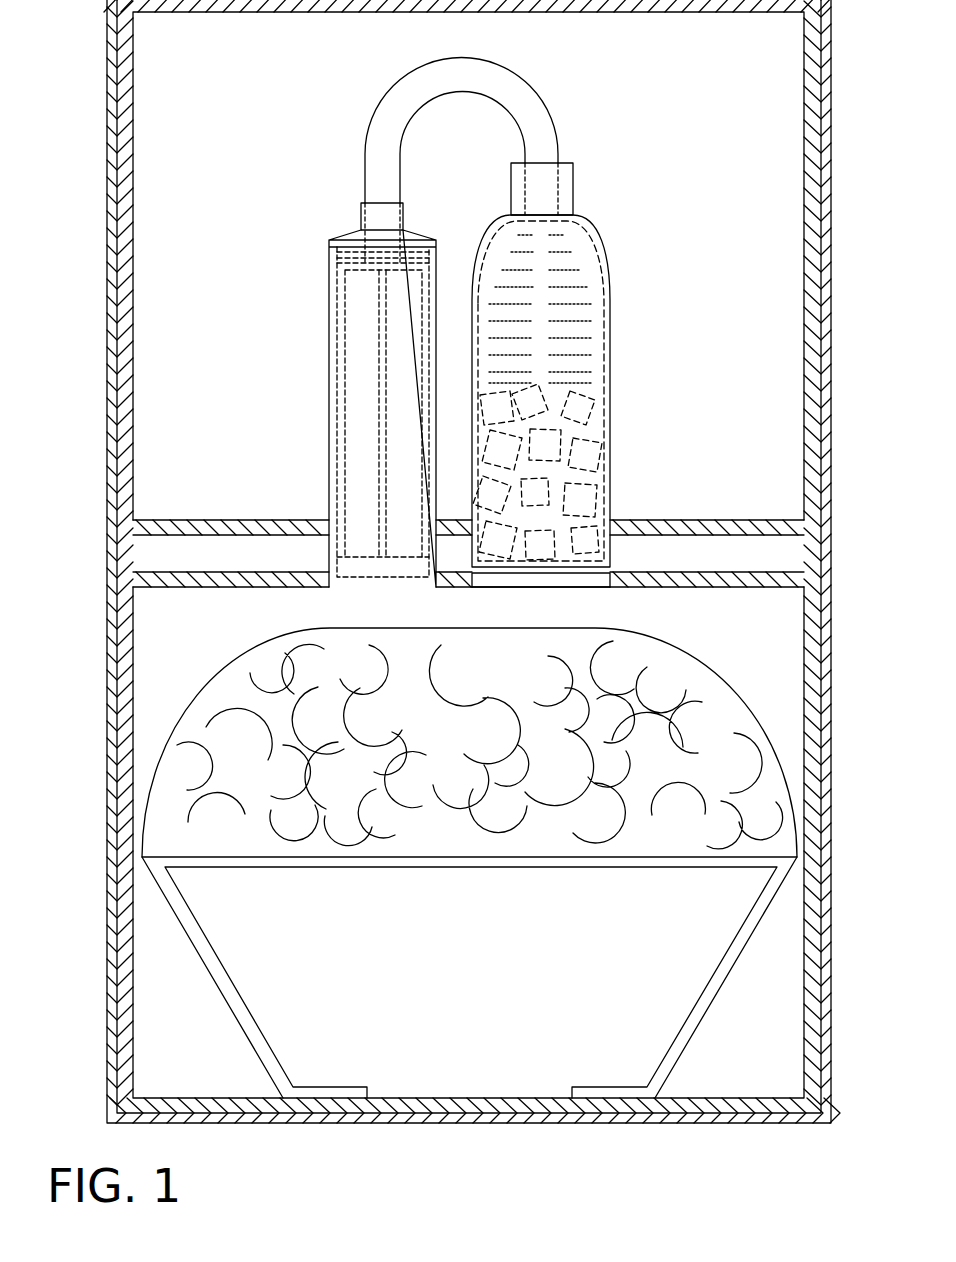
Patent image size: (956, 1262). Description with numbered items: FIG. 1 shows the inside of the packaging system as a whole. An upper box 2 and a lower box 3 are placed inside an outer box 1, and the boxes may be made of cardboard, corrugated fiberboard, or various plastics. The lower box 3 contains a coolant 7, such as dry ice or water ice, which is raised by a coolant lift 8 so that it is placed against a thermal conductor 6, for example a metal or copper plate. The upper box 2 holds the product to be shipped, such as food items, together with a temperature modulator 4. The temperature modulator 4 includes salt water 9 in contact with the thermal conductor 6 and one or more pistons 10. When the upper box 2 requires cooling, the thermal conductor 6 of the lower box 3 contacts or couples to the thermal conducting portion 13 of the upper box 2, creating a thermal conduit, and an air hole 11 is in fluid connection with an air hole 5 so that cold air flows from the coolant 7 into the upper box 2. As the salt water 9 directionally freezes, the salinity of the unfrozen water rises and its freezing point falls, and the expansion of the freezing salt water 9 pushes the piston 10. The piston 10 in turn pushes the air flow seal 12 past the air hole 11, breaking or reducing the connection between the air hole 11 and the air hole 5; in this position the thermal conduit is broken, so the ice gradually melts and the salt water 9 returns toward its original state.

The outer box 1 is at (107, 27).
The upper box 2 is at (117, 77).
The lower box 3 is at (113, 648).
The temperature modulator 4 is at (568, 89).
The air hole 5 is at (329, 575).
The thermal conductor 6 is at (493, 582).
The coolant 7 is at (436, 762).
The coolant lift 8 is at (219, 1013).
The salt water 9 is at (589, 318).
The piston 10 is at (363, 281).
The air hole 11 is at (330, 309).
The air flow seal 12 is at (329, 453).
The thermal conducting portion 13 is at (564, 576).